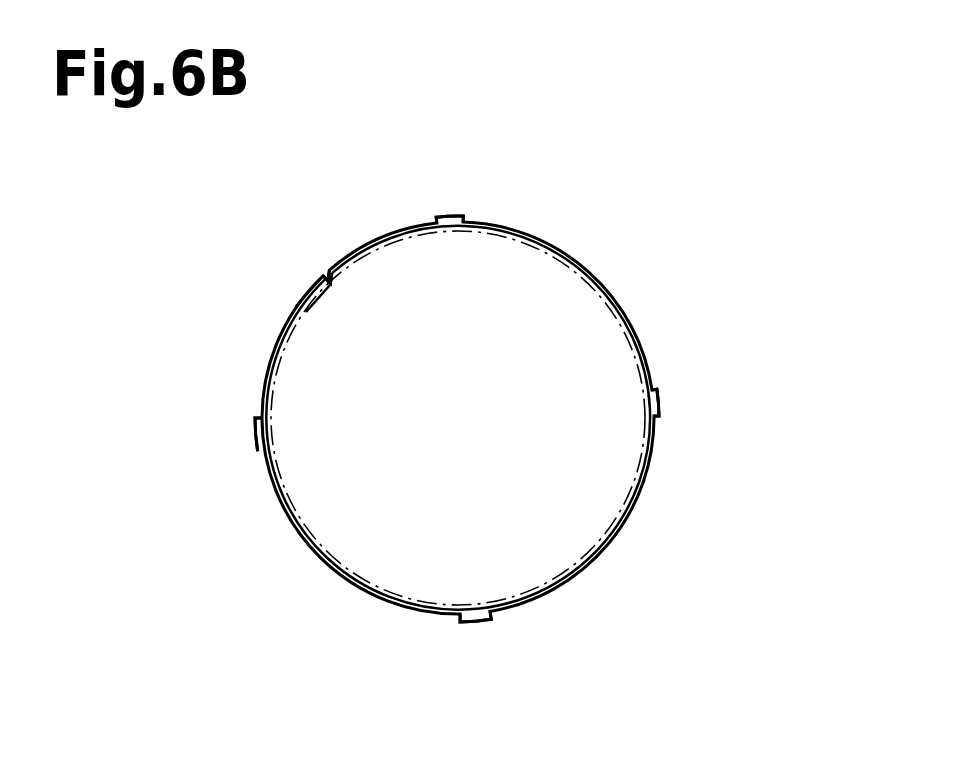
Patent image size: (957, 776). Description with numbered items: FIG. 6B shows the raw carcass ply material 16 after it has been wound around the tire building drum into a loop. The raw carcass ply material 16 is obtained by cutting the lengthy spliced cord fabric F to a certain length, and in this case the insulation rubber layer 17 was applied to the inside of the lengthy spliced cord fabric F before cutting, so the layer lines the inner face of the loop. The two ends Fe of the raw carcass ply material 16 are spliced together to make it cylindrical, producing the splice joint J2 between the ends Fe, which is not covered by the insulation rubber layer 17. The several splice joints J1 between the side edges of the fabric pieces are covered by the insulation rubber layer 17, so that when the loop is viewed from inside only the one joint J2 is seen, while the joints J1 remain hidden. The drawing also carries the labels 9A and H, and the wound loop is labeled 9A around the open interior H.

The ring-shaped ferrite member 9A is at (478, 415).
The raw carcass ply material 16 is at (625, 523).
The insulation rubber layer 17 is at (595, 565).
The lengthy spliced cord fabric F is at (508, 423).
The splice joint J1 is at (444, 196).
The splice joint J2 is at (299, 262).
The ends Fe is at (298, 290).
The hollow center H is at (468, 421).